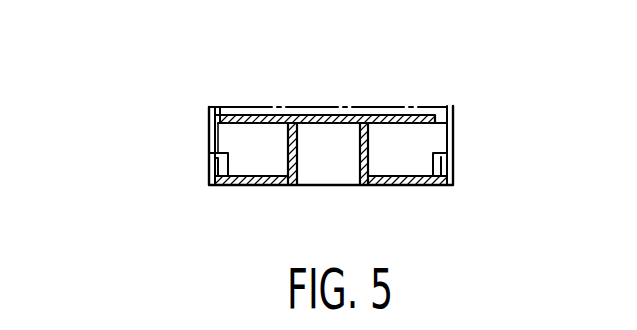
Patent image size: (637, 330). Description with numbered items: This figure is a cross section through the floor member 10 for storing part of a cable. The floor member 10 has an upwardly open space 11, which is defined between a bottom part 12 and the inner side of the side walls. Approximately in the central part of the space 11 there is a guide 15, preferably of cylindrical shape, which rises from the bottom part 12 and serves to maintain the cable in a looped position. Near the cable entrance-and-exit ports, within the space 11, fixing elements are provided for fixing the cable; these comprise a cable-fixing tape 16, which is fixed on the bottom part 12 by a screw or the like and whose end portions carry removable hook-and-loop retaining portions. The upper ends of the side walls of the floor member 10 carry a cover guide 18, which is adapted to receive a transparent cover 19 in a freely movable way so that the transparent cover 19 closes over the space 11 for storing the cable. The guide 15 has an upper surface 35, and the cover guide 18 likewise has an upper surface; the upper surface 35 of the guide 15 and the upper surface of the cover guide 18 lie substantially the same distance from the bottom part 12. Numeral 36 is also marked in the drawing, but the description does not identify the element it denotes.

The connector assembly 10 is at (196, 140).
The housing cavity 11 is at (425, 141).
The base plate 12 is at (400, 187).
The central channel 15 is at (383, 123).
The latch tab 16 is at (228, 158).
The top wall 18 is at (230, 112).
The reference plane 19 is at (295, 107).
The top bar 35 is at (338, 116).
The partition wall 36 is at (370, 141).